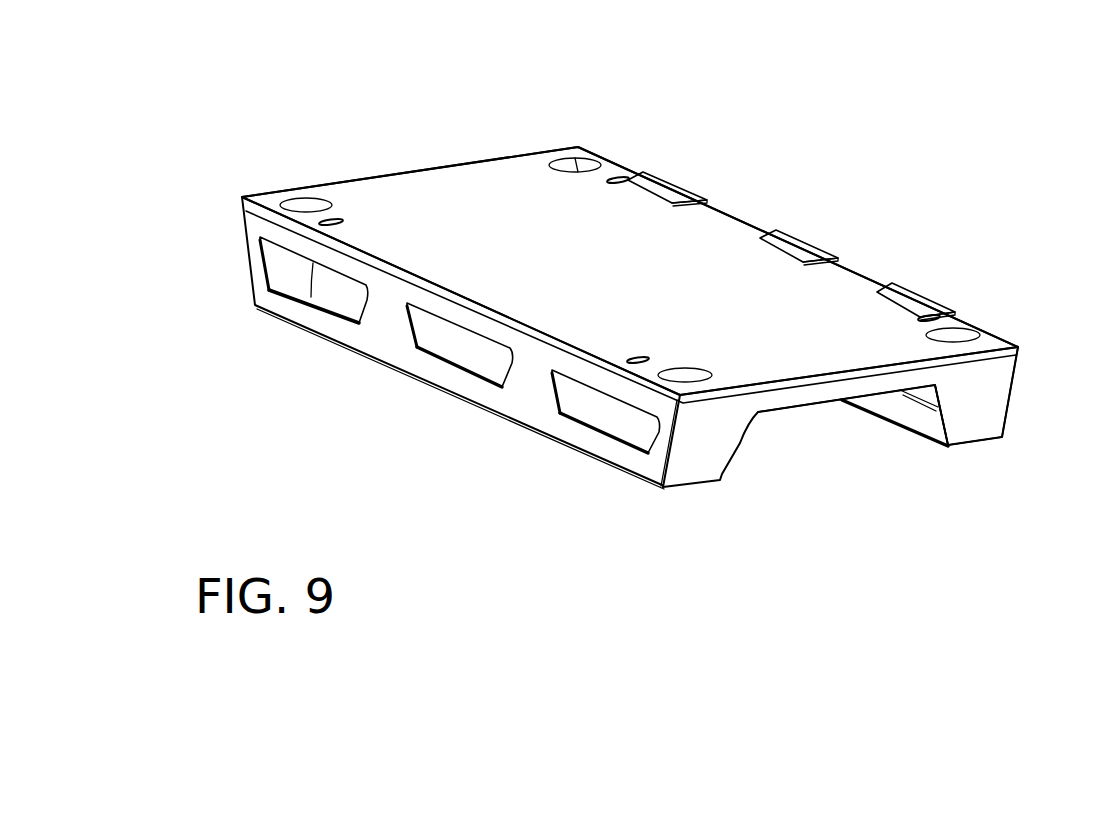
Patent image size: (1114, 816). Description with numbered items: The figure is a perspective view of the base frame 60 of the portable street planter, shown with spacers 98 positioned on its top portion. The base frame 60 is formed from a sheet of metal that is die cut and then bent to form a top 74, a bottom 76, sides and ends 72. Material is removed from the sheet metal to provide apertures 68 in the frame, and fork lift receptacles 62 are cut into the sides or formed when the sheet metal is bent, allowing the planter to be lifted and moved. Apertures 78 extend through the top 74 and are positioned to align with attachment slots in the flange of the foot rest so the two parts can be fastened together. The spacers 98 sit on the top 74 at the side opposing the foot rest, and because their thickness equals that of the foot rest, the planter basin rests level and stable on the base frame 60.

The base frame 60 is at (883, 142).
The fork lift receptacles 62 is at (472, 354).
The apertures 68 is at (300, 207).
The ends 72 is at (982, 398).
The top 74 is at (468, 182).
The bottom 76 is at (913, 423).
The apertures 78 is at (337, 220).
The spacers 98 is at (667, 188).